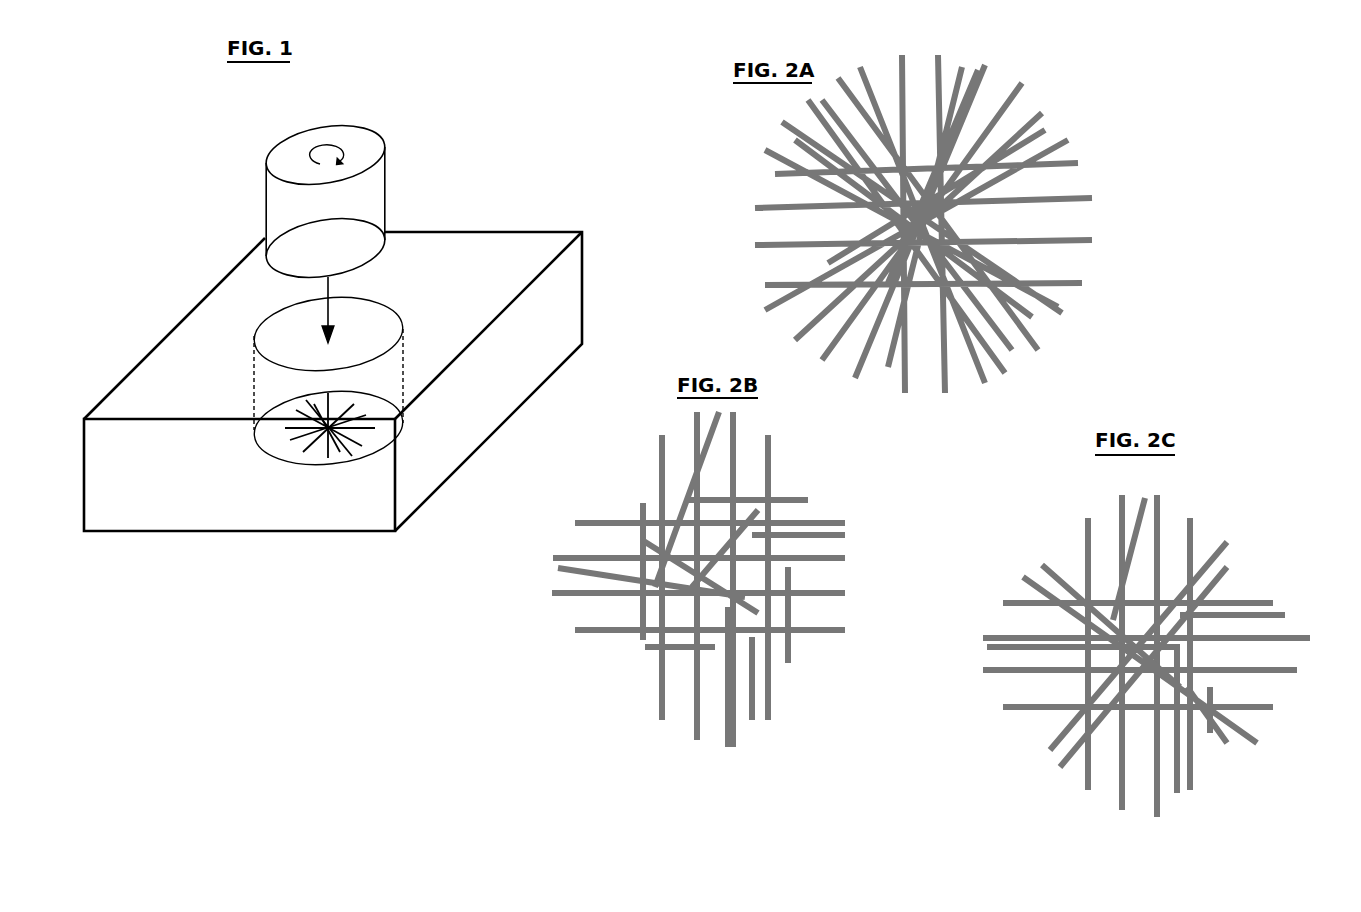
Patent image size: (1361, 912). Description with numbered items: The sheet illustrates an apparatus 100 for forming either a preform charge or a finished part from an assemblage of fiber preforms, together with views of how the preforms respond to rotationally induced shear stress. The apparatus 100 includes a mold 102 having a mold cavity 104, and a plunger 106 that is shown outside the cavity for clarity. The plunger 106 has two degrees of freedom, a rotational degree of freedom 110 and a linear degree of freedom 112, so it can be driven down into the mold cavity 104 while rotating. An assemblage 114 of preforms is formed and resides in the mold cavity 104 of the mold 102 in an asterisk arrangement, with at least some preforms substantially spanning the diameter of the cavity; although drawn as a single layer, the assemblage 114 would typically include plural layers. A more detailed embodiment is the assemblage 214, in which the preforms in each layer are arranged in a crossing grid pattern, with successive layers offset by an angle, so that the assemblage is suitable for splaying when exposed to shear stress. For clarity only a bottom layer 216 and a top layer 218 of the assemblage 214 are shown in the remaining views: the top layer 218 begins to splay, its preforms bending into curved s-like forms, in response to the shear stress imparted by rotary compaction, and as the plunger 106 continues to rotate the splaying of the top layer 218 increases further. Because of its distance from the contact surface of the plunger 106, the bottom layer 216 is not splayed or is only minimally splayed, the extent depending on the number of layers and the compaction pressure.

In FIG. 1, the apparatus 100 is at (582, 208).
In FIG. 1, the mold 102 is at (448, 257).
In FIG. 1, the mold cavity 104 is at (273, 377).
In FIG. 1, the plunger 106 is at (282, 208).
In FIG. 1, the rotational degree-of-freedom 110 is at (343, 145).
In FIG. 1, the linear degree-of-freedom 112 is at (337, 313).
In FIG. 1, the assemblage of preforms 114 is at (282, 443).
In FIG. 2A, the assemblage of preforms 214 is at (1088, 172).
In FIG. 2B, the bottom layer 216 is at (770, 483).
In FIG. 2C, the bottom layer 216 is at (1088, 553).
In FIG. 2B, the top layer 218 is at (760, 610).
In FIG. 2C, the top layer 218 is at (1187, 633).